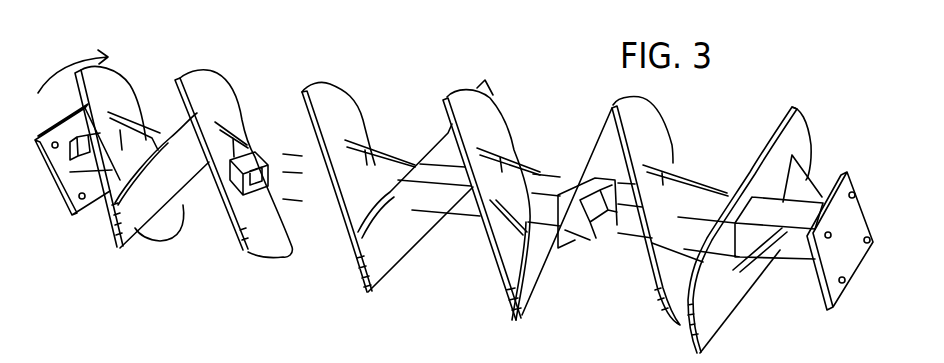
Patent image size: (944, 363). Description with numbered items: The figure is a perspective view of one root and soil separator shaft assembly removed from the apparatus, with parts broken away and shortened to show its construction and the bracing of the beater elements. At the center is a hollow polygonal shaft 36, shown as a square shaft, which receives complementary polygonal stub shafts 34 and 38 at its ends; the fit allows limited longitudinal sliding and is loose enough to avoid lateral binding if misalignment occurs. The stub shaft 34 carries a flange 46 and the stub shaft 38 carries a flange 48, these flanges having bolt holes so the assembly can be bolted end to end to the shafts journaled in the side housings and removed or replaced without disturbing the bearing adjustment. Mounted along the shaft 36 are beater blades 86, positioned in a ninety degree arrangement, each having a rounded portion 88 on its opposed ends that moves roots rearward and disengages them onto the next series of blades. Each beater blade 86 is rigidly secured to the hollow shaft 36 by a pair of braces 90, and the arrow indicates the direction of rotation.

The stub shaft 34 is at (77, 165).
The hollow polygonal shaft 36 is at (377, 165).
The stub shaft 38 is at (613, 222).
The flange 46 is at (94, 198).
The flange 48 is at (862, 208).
The beater blade 86 is at (317, 92).
The rounded portion 88 is at (181, 80).
The brace 90 is at (448, 220).